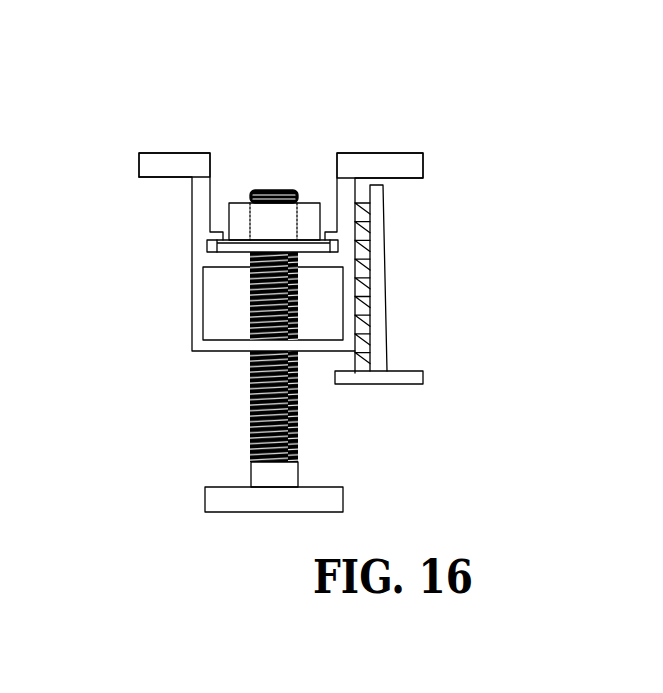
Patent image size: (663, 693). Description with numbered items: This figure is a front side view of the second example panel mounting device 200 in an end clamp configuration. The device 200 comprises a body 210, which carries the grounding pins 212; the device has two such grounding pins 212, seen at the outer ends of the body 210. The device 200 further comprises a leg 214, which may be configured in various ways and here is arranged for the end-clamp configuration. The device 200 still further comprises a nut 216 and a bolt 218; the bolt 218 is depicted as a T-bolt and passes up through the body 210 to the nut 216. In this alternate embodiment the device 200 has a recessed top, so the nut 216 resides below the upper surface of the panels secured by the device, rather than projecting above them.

The panel mounting device 200 is at (350, 78).
The body 210 is at (157, 152).
The grounding pins 212 is at (168, 180).
The leg 214 is at (403, 370).
The nut 216 is at (313, 203).
The bolt 218 is at (225, 487).